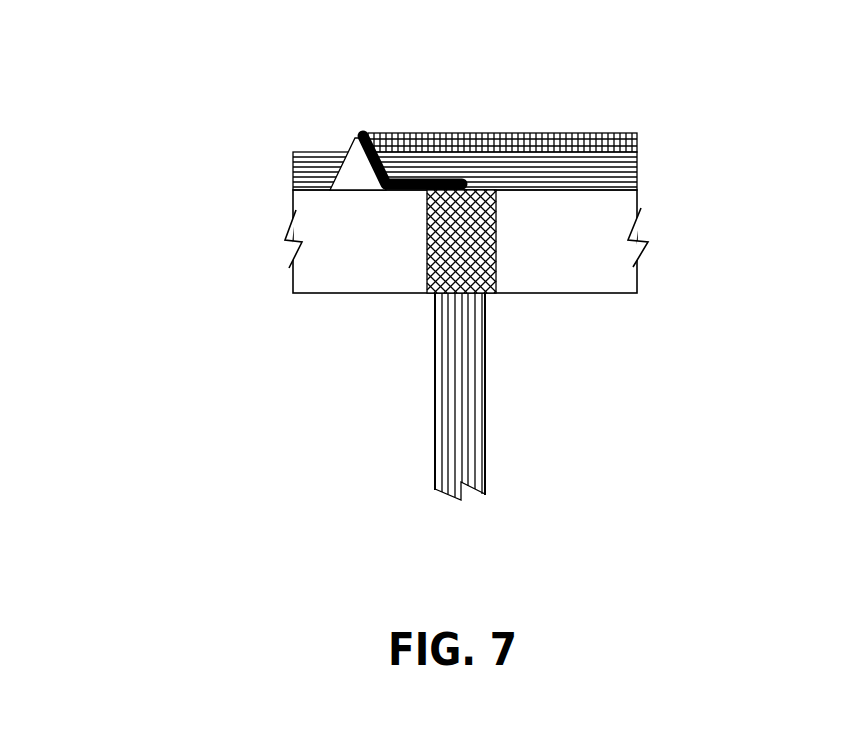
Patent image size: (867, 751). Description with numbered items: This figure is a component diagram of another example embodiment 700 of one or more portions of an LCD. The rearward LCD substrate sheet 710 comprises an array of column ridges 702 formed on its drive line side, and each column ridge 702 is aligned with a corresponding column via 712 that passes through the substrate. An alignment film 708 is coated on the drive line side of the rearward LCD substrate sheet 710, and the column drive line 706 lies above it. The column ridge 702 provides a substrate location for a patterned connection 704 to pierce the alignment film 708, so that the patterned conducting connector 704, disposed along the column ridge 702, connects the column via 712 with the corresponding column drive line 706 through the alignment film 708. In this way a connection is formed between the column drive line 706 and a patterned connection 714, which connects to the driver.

The example embodiment 700 is at (142, 46).
The column ridge 702 is at (357, 172).
The patterned connection 704 is at (358, 136).
The column drive line 706 is at (631, 134).
The alignment film 708 is at (292, 167).
The rearward LCD substrate sheet 710 is at (328, 280).
The column via 712 is at (487, 267).
The patterned connection 714 is at (462, 392).